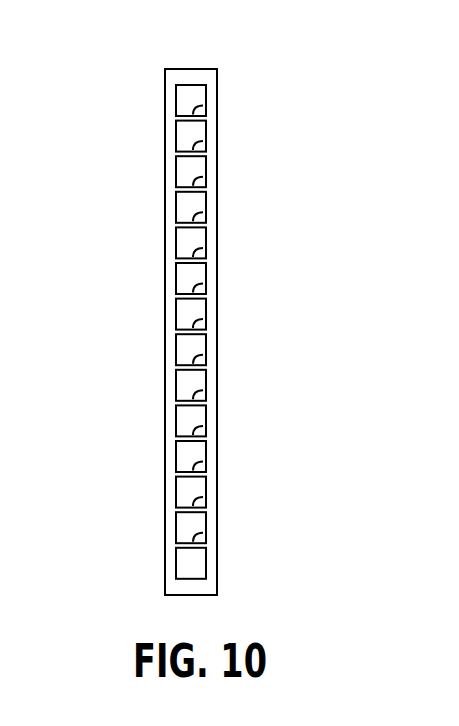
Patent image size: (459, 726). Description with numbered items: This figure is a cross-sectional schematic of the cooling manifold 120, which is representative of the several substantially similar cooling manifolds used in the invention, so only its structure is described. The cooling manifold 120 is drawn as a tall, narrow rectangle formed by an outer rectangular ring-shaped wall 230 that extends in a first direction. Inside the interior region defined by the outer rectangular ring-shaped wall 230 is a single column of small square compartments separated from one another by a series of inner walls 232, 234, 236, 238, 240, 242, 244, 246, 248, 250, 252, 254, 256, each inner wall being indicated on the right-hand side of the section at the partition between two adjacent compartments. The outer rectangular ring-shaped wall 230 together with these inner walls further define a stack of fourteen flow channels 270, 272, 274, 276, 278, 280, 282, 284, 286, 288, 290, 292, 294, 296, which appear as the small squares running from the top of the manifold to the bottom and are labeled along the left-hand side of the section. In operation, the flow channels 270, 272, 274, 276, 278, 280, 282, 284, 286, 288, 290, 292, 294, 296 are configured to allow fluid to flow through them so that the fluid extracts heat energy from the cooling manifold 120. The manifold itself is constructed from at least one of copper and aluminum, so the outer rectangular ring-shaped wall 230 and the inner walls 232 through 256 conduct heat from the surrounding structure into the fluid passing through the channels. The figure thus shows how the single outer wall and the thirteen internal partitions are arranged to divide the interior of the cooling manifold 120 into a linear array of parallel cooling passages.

The cooling manifold 120 is at (163, 48).
The outer rectangular ring-shaped wall 230 is at (210, 89).
The inner wall 232 is at (203, 106).
The inner wall 234 is at (203, 141).
The inner wall 236 is at (203, 177).
The inner wall 238 is at (203, 212).
The inner wall 240 is at (203, 248).
The inner wall 242 is at (203, 284).
The inner wall 244 is at (203, 319).
The inner wall 246 is at (203, 355).
The inner wall 248 is at (203, 390).
The inner wall 250 is at (203, 426).
The inner wall 252 is at (203, 462).
The inner wall 254 is at (203, 497).
The inner wall 256 is at (203, 533).
The flow channel 270 is at (187, 100).
The flow channel 272 is at (187, 136).
The flow channel 274 is at (187, 172).
The flow channel 276 is at (187, 207).
The flow channel 278 is at (187, 243).
The flow channel 280 is at (187, 278).
The flow channel 282 is at (187, 314).
The flow channel 284 is at (187, 350).
The flow channel 286 is at (187, 385).
The flow channel 288 is at (187, 421).
The flow channel 290 is at (187, 456).
The flow channel 292 is at (187, 492).
The flow channel 294 is at (187, 528).
The flow channel 296 is at (187, 563).